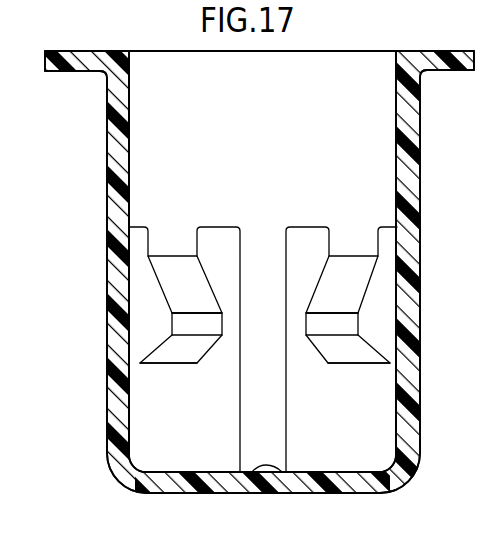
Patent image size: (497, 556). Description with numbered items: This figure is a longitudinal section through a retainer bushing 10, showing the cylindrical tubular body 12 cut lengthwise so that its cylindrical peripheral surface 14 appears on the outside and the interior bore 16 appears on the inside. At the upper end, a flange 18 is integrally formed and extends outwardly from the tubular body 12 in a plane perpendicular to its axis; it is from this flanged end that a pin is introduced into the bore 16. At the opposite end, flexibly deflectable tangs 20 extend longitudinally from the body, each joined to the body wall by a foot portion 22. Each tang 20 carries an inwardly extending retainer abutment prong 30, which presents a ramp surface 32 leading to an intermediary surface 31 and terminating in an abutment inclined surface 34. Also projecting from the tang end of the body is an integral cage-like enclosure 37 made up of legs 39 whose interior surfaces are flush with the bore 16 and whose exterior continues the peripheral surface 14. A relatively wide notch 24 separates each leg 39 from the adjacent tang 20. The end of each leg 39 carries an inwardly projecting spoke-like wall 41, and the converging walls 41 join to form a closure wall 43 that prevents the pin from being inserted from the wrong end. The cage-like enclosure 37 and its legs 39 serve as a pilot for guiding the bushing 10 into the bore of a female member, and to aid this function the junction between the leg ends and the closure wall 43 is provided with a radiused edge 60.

The retainer bushing 10 is at (423, 41).
The cylindrical tubular body 12 is at (407, 135).
The cylindrical peripheral surface 14 is at (107, 129).
The bore 16 is at (129, 143).
The flange 18 is at (77, 58).
The tang 20 is at (181, 364).
The foot portion 22 is at (162, 245).
The notch 24 is at (213, 238).
The retainer abutment prong 30 is at (182, 324).
The intermediary surface 31 is at (307, 317).
The ramp surface 32 is at (165, 264).
The abutment inclined surface 34 is at (199, 348).
The cage-like enclosure 37 is at (168, 494).
The leg 39 is at (118, 432).
The spoke-like wall 41 is at (207, 482).
The closure wall 43 is at (307, 497).
The radiused edge 60 is at (119, 478).